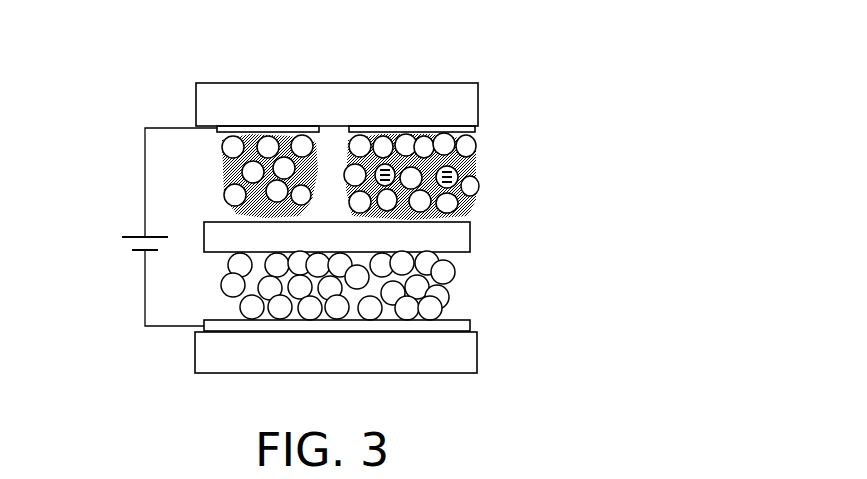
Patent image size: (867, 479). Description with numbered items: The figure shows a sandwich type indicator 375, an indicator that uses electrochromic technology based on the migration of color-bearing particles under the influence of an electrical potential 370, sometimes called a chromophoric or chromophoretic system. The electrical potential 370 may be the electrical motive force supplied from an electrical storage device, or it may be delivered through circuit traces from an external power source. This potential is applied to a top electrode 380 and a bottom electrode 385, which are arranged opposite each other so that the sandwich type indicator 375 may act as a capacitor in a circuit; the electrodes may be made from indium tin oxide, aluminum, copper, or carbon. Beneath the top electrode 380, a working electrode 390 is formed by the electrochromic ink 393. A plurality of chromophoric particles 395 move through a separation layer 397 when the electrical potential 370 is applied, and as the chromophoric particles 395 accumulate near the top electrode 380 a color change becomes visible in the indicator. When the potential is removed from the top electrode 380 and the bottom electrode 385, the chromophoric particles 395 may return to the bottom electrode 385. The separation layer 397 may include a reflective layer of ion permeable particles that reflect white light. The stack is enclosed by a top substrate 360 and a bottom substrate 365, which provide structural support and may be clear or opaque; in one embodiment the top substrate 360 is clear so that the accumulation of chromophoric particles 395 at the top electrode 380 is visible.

The top substrate 360 is at (480, 106).
The bottom substrate 365 is at (478, 355).
The electrical potential 370 is at (108, 236).
The sandwich type indicator 375 is at (308, 234).
The top electrode 380 is at (262, 128).
The bottom electrode 385 is at (472, 324).
The working electrode 390 is at (369, 137).
The electrochromic ink 393 is at (220, 200).
The chromophoric particles 395 is at (456, 277).
The separation layer 397 is at (472, 242).